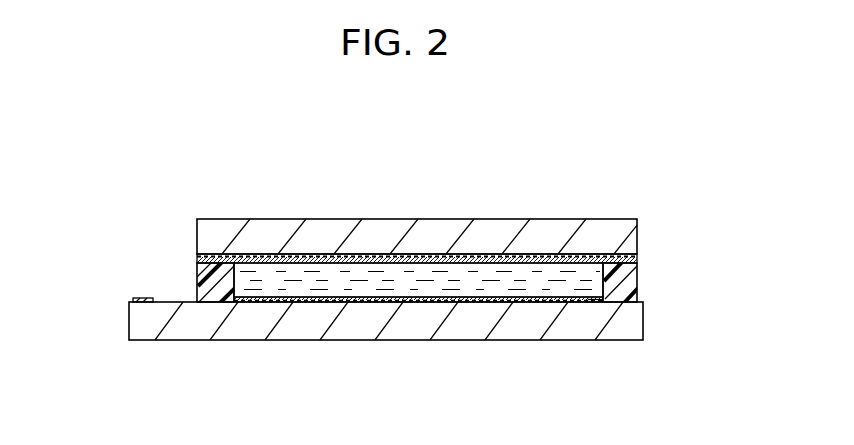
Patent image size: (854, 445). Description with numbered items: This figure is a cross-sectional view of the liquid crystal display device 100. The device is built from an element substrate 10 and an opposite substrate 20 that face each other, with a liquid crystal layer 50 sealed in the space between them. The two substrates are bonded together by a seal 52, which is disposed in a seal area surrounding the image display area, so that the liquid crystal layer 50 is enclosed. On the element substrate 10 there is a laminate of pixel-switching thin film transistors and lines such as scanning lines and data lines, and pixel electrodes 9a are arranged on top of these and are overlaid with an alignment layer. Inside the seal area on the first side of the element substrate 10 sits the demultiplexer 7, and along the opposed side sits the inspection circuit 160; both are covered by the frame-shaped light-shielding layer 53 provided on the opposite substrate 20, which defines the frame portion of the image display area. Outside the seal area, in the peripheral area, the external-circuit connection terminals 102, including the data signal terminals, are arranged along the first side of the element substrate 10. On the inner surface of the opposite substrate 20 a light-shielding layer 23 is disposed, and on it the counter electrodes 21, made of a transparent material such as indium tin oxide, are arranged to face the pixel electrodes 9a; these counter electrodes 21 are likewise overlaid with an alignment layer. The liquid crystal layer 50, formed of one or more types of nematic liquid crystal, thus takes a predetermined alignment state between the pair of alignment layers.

The liquid crystal display device 100 is at (566, 103).
The element substrate 10 is at (445, 332).
The opposite substrate 20 is at (342, 228).
The counter electrodes 21 is at (537, 255).
The light-shielding layer 23 is at (405, 254).
The frame-shaped light-shielding layer 53 is at (233, 255).
The seal 52 is at (197, 272).
The liquid crystal layer 50 is at (369, 285).
The demultiplexer 7 is at (244, 300).
The pixel electrodes 9a is at (280, 300).
The inspection circuit 160 is at (593, 301).
The external-circuit connection terminals 102 is at (138, 298).